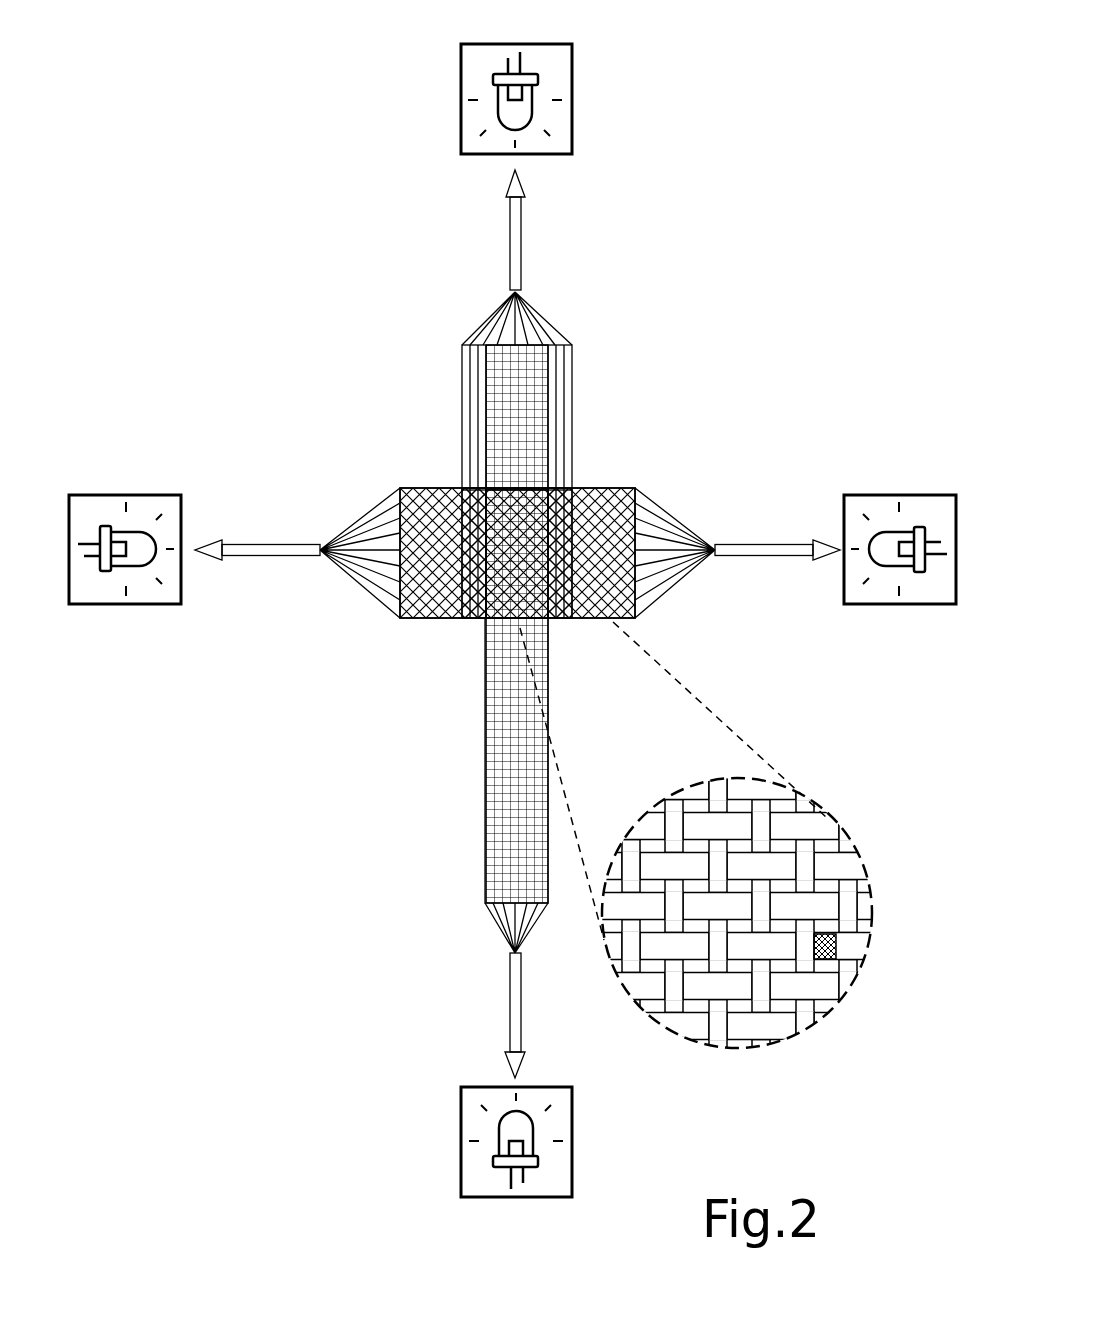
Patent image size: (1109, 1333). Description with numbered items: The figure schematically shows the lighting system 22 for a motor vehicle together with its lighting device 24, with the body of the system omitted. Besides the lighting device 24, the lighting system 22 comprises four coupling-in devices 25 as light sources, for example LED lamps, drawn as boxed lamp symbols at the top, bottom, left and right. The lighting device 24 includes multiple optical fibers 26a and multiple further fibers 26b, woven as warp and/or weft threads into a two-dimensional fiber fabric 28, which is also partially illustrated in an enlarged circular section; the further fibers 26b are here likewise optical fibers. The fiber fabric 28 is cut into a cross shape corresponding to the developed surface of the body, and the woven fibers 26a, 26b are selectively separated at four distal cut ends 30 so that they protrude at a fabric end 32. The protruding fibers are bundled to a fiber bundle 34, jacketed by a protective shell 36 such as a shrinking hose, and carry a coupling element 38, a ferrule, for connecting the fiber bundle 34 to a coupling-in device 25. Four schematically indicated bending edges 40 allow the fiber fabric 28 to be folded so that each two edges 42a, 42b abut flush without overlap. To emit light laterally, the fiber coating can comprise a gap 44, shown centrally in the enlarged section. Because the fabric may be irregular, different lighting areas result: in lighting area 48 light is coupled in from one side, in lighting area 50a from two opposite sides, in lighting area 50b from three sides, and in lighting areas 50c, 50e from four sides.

The lighting system 22 is at (795, 120).
The lighting device 24 is at (536, 609).
The coupling-in device 25 is at (573, 76).
The optical fibers 26a is at (350, 525).
The further fibers 26b is at (547, 323).
The fiber fabric 28 is at (785, 918).
The distal cut end 30 is at (475, 950).
The fabric end 32 is at (455, 878).
The fiber bundle 34 is at (522, 233).
The protective shell 36 is at (523, 230).
The coupling element 38 is at (524, 185).
The bending edge 40 is at (524, 488).
The edge 42a is at (536, 568).
The edge 42b is at (524, 466).
The gap 44 is at (825, 962).
The lighting area 48 is at (562, 412).
The lighting area 50a is at (605, 543).
The lighting area 50b is at (473, 617).
The lighting area 50c is at (541, 621).
The lighting area 50e is at (520, 417).